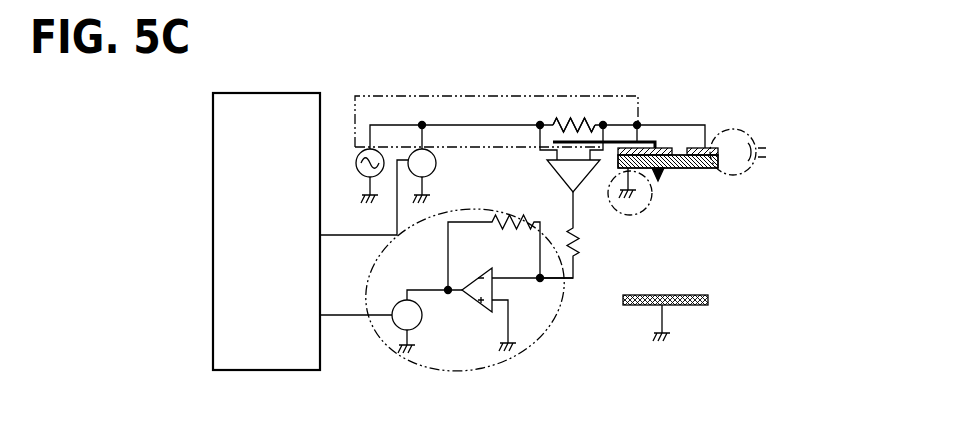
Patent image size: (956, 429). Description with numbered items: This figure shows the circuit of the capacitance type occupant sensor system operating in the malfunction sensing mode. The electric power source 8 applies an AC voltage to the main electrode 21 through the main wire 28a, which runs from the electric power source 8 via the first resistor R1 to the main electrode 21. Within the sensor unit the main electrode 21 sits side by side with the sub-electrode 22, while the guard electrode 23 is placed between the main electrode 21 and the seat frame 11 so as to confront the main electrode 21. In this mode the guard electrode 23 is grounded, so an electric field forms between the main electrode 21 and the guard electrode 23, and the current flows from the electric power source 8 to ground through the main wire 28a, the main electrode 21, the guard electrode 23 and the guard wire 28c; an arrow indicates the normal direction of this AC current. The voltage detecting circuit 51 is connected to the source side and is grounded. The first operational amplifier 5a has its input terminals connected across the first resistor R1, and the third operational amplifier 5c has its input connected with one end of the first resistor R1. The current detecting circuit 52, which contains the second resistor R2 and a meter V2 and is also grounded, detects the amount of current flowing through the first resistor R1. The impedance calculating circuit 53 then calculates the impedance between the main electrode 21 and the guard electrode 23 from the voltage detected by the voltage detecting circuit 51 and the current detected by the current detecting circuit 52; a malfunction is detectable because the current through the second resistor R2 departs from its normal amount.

The electric power source 8 is at (357, 152).
The main wire 28a is at (415, 96).
The voltage detecting circuit 51 is at (436, 163).
The first resistor R1 is at (580, 122).
The first operational amplifier 5a is at (597, 203).
The main electrode 21 is at (647, 146).
The sub-electrode 22 is at (714, 140).
The guard electrode 23 is at (672, 168).
The guard wire 28c is at (648, 211).
The seat frame 11 is at (708, 300).
The current detecting circuit 52 is at (542, 332).
The voltmeter V2 is at (391, 320).
The third operational amplifier 5c is at (474, 306).
The second resistor R2 is at (500, 229).
The impedance calculating circuit 53 is at (213, 252).